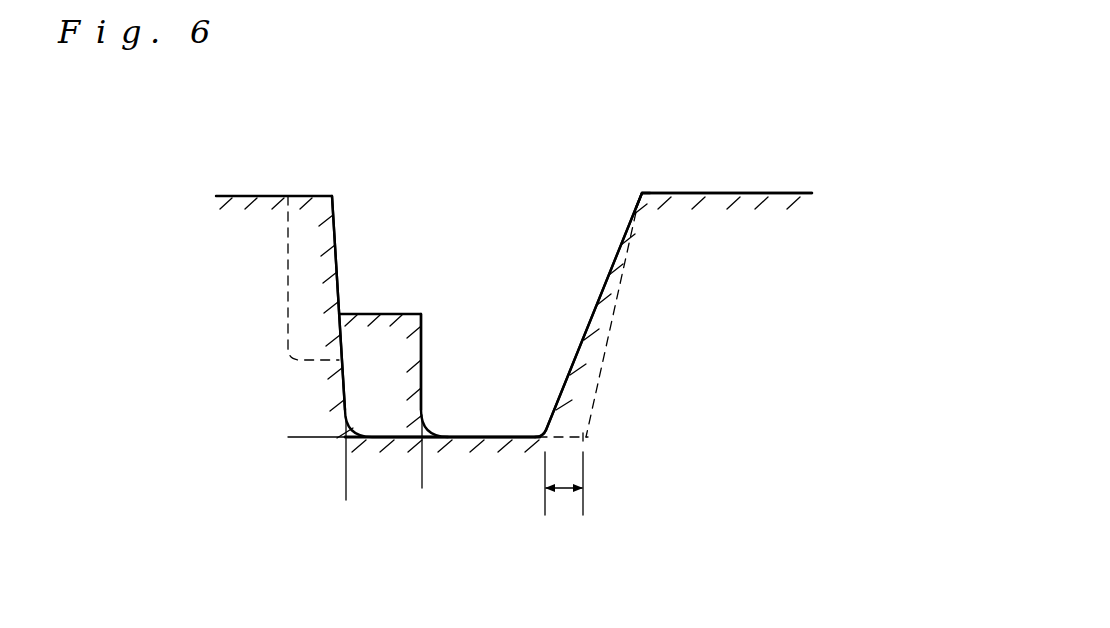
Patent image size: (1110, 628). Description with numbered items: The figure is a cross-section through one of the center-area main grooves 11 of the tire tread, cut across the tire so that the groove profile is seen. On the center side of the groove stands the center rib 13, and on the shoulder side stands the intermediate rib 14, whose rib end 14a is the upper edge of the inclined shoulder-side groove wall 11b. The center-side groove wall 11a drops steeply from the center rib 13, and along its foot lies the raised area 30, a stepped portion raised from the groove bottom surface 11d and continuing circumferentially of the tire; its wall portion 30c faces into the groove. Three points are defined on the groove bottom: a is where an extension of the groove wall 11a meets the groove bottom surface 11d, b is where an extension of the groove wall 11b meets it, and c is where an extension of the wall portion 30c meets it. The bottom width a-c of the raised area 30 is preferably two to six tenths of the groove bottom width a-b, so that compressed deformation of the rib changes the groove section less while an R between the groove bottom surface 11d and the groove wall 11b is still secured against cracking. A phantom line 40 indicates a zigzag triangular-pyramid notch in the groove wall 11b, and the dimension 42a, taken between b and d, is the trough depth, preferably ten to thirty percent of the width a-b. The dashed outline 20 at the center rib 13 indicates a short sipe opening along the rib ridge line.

The main groove 11 is at (485, 235).
The groove wall 11a is at (340, 258).
The groove wall 11b is at (602, 267).
The groove bottom surface 11d is at (474, 437).
The center rib 13 is at (268, 237).
The intermediate rib 14 is at (727, 238).
The rib end 14a is at (641, 191).
The short sipe 20 is at (290, 301).
The raised area 30 is at (363, 373).
The wall portion 30c is at (423, 361).
The notch 40 is at (598, 358).
The depth of trough 42a is at (568, 487).
The intersection point a is at (343, 440).
The intersection point b is at (539, 442).
The intersection point c is at (425, 443).
The point d is at (588, 438).